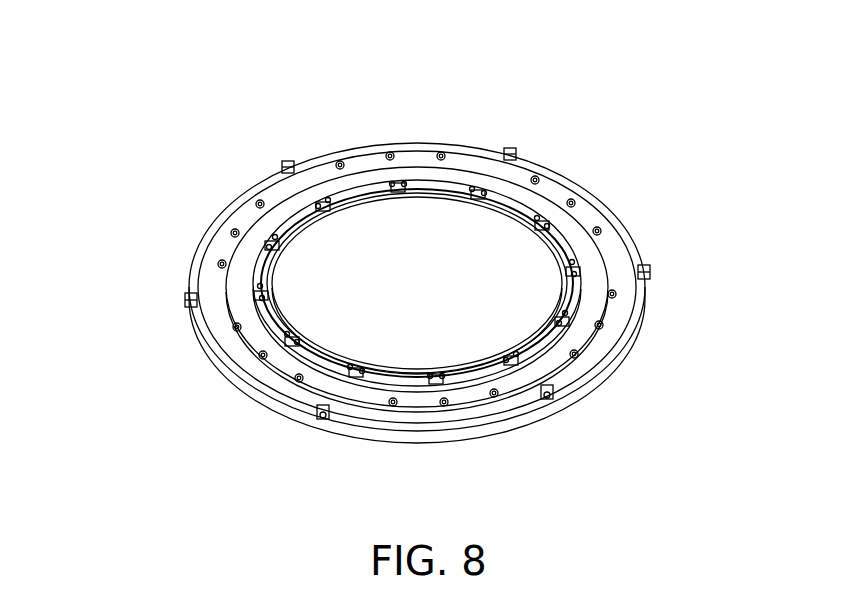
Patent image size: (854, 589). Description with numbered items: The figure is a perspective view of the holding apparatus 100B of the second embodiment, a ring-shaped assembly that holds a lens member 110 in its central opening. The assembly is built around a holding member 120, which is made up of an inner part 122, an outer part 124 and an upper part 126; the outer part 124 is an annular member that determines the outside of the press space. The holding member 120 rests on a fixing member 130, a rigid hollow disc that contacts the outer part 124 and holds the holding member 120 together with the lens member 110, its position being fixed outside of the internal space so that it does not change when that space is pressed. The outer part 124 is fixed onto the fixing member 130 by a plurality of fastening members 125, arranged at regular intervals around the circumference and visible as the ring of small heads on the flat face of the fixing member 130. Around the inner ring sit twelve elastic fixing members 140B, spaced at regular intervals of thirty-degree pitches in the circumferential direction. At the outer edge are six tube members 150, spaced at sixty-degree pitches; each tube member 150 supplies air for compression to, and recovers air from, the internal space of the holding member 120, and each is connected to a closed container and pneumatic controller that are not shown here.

The holding apparatus 100B is at (442, 32).
The lens member 110 is at (378, 232).
The holding member 120 is at (82, 230).
The inner part 122 is at (262, 262).
The outer part 124 is at (223, 240).
The fastening members 125 is at (448, 155).
The upper part 126 is at (240, 265).
The fixing member 130 is at (243, 385).
The elastic fixing members 140B is at (267, 232).
The tube members 150 is at (283, 170).